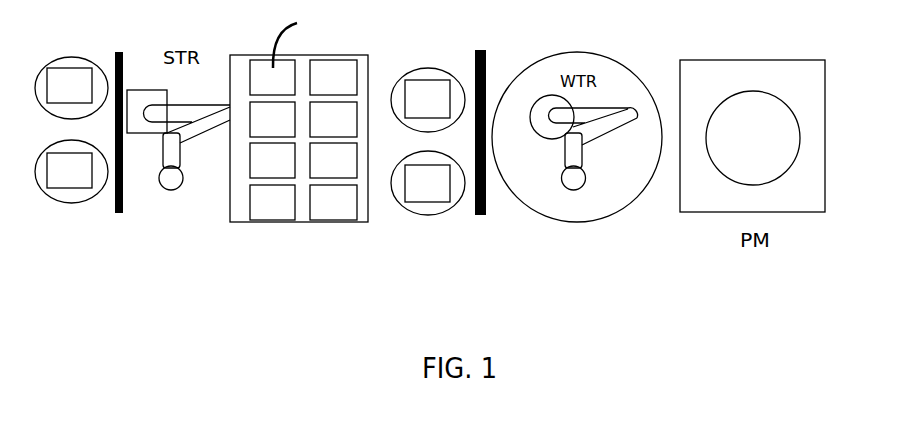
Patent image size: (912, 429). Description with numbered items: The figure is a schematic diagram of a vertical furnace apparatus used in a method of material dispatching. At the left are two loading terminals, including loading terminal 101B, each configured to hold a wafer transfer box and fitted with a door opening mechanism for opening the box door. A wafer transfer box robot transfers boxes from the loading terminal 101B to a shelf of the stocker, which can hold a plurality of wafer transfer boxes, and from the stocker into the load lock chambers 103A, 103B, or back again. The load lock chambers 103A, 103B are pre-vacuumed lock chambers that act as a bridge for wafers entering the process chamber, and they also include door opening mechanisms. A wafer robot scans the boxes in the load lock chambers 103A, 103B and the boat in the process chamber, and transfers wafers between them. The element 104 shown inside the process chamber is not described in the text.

The loading terminal 101B is at (71, 192).
The load lock chamber 103A is at (428, 81).
The load lock chamber 103B is at (428, 206).
The wafer / substrate in process module 104 is at (753, 138).